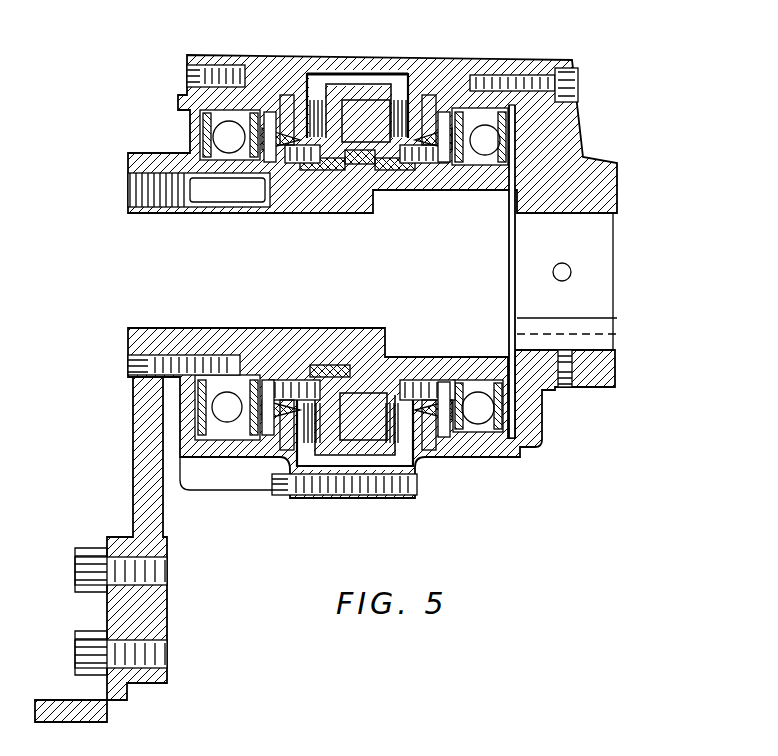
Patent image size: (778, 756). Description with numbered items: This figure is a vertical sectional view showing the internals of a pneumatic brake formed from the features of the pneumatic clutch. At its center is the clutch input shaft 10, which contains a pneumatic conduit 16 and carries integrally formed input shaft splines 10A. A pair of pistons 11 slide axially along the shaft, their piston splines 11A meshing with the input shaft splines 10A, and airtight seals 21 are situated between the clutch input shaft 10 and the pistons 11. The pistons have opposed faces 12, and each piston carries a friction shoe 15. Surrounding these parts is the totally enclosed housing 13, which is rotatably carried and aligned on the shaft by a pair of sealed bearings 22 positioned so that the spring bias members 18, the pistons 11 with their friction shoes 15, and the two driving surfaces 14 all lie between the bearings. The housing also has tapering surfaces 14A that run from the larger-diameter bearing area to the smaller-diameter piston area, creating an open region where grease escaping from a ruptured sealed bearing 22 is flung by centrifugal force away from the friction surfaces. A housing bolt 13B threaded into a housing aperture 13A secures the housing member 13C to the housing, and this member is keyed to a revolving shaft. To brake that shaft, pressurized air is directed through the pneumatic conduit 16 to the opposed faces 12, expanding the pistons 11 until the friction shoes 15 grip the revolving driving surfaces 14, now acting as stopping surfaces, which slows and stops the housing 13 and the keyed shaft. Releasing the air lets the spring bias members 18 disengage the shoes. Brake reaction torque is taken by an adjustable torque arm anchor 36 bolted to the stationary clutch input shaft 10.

The clutch input shaft 10 is at (180, 300).
The input shaft splines 10A is at (345, 365).
The pistons 11 is at (393, 393).
The piston splines 11A is at (372, 165).
The opposed faces 12 is at (340, 497).
The totally enclosed housing 13 is at (245, 480).
The housing aperture 13A is at (187, 74).
The housing bolt 13B is at (578, 78).
The housing member 13C is at (590, 362).
The driving surfaces 14 is at (430, 410).
The tapering surfaces 14A is at (445, 440).
The friction shoe 15 is at (428, 375).
The pneumatic conduit 16 is at (250, 205).
The spring bias members 18 is at (418, 420).
The airtight seals 21 is at (440, 385).
The sealed bearings 22 is at (482, 410).
The adjustable torque arm anchor 36 is at (140, 465).